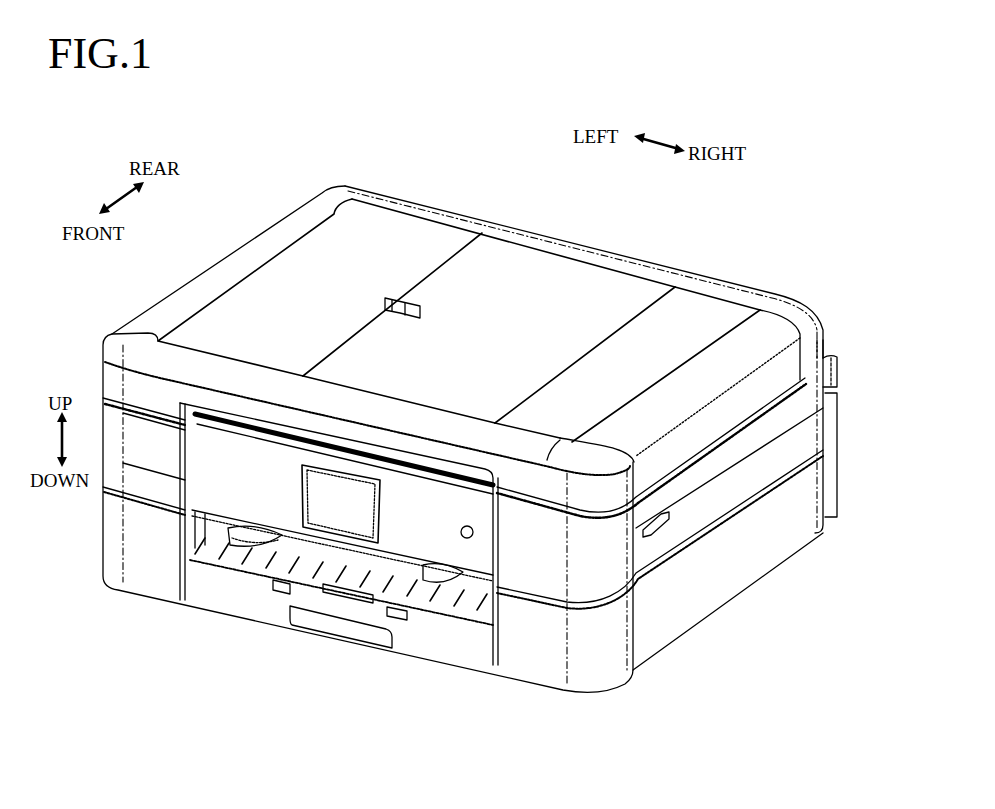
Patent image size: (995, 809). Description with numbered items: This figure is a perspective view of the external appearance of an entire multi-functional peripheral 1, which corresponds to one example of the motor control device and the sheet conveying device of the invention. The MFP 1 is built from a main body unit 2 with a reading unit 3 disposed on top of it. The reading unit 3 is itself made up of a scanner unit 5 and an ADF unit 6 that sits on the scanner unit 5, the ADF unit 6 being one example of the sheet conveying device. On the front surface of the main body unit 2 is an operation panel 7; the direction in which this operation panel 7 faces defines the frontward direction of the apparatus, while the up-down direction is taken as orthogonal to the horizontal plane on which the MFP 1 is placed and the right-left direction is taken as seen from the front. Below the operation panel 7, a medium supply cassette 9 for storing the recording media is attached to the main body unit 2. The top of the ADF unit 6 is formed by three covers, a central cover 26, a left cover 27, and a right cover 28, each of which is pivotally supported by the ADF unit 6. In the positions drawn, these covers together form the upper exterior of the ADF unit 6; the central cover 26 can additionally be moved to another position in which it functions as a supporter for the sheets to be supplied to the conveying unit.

The multi-functional peripheral 1 is at (262, 156).
The main body unit 2 is at (733, 577).
The reading unit 3 is at (849, 355).
The scanner unit 5 is at (820, 372).
The ADF unit 6 is at (819, 337).
The operation panel 7 is at (258, 492).
The medium supply cassette 9 is at (428, 640).
The central cover 26 is at (560, 276).
The left cover 27 is at (383, 232).
The right cover 28 is at (717, 306).